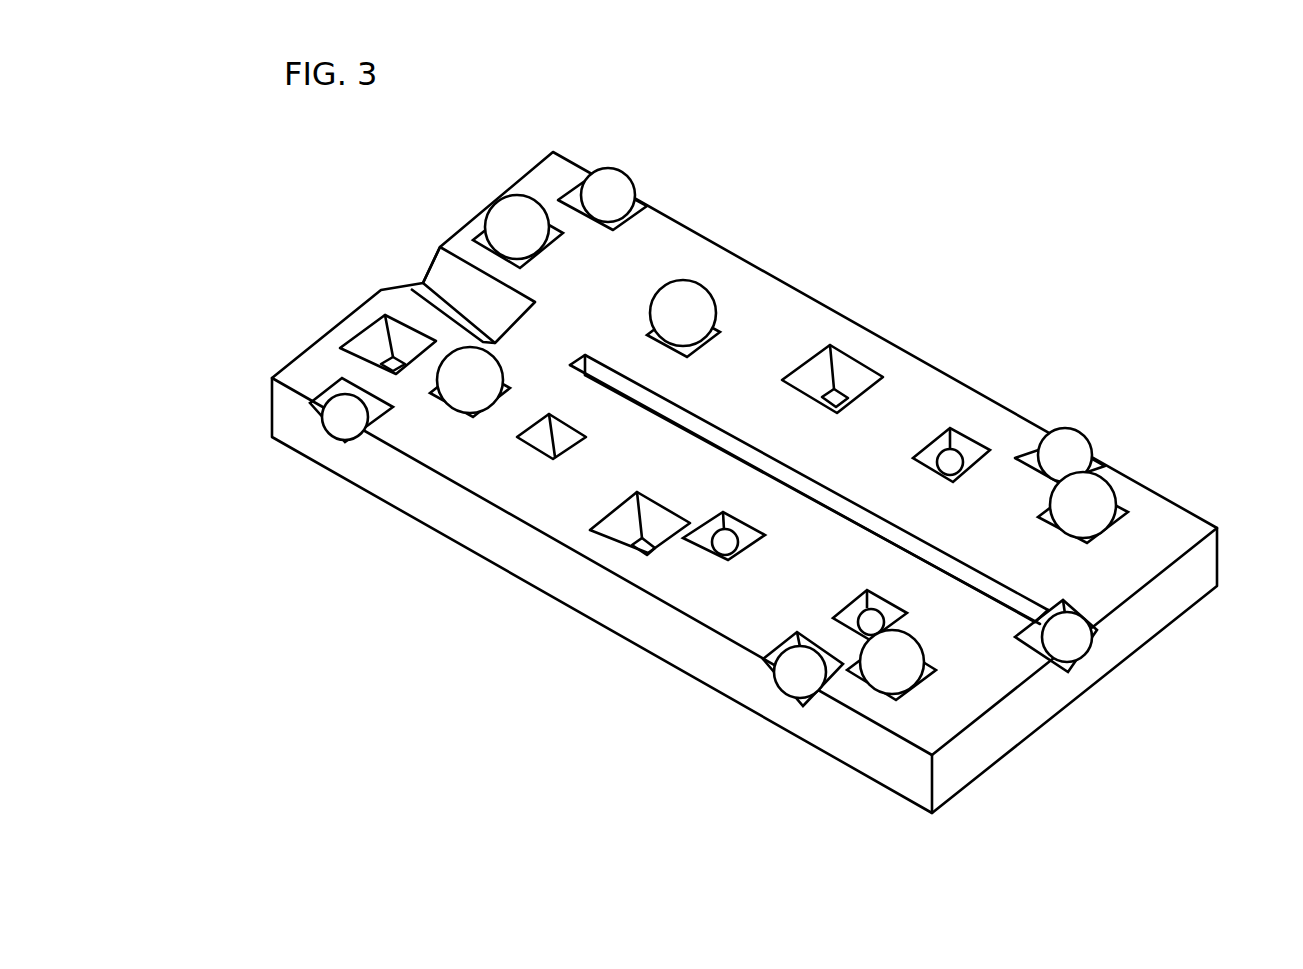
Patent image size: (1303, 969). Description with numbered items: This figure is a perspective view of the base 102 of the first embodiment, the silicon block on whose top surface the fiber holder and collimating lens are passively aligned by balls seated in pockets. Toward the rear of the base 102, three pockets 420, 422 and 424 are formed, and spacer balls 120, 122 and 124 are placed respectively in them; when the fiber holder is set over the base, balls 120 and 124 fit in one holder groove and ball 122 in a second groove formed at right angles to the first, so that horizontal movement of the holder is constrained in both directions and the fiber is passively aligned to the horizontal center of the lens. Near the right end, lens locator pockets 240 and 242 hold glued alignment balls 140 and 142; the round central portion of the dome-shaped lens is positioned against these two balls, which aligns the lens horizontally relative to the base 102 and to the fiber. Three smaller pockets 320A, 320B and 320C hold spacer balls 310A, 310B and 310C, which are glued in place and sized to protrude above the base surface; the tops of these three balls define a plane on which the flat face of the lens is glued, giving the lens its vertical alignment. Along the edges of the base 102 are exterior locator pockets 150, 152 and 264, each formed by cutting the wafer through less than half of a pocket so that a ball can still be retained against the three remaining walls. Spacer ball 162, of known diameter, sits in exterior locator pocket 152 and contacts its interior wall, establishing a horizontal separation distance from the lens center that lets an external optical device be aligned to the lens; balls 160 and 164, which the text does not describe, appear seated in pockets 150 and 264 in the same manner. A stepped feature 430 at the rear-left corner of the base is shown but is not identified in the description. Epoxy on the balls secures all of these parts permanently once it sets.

The base 102 is at (462, 558).
The spacer ball 120 is at (502, 204).
The spacer ball 122 is at (428, 390).
The spacer ball 124 is at (690, 283).
The alignment ball 140 is at (892, 665).
The alignment ball 142 is at (1100, 500).
The exterior locator pocket 150 is at (332, 380).
The exterior locator pocket 152 is at (835, 668).
The alignment ball 160 is at (337, 423).
The spacer ball 162 is at (800, 678).
The alignment ball 164 is at (1065, 640).
The lens locator pocket 240 is at (937, 670).
The lens locator pocket 242 is at (1130, 527).
The exterior locator pocket 264 is at (1100, 633).
The spacer ball 310A is at (683, 540).
The spacer ball 310B is at (850, 605).
The spacer ball 310C is at (960, 441).
The pocket 320A is at (712, 540).
The pocket 320B is at (857, 622).
The pocket 320C is at (952, 430).
The pocket 420 is at (481, 236).
The pocket 422 is at (510, 398).
The pocket 424 is at (720, 336).
The raised support block 430 is at (430, 264).